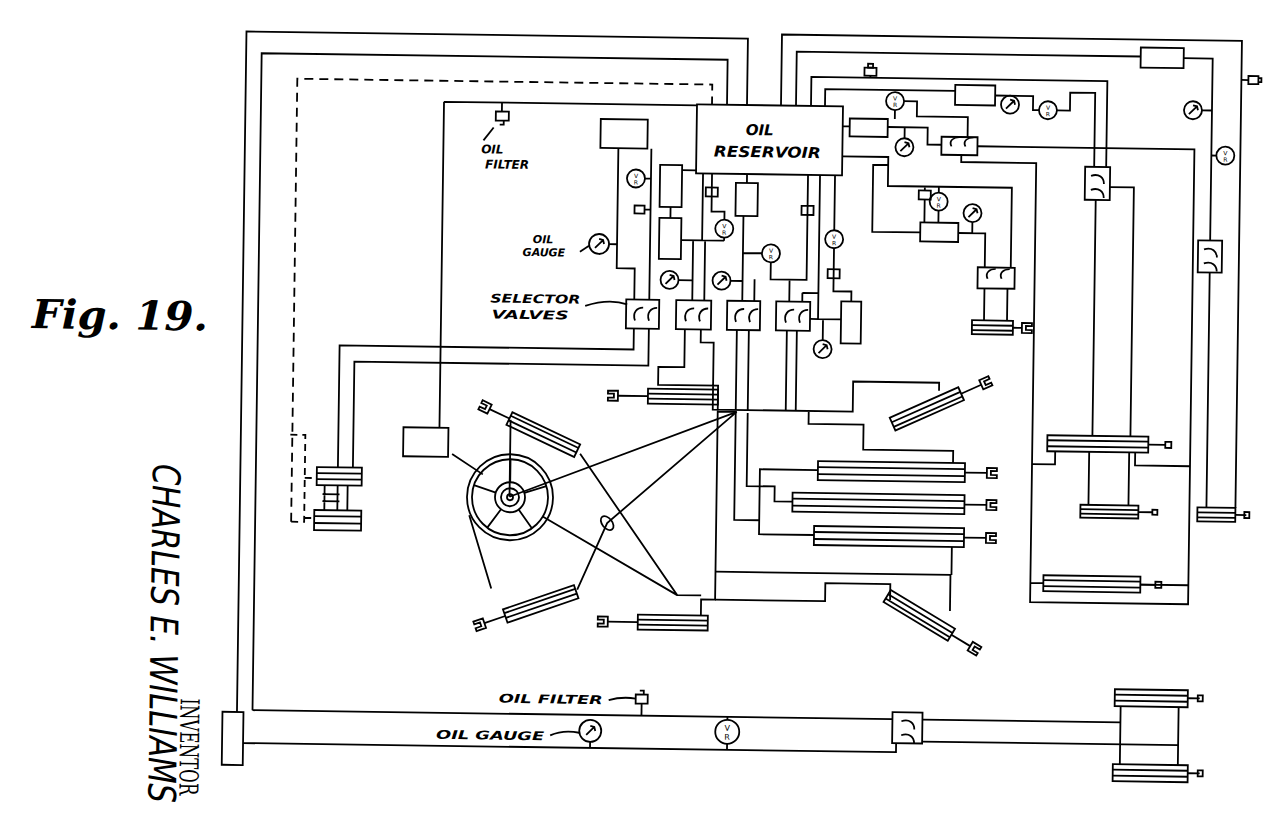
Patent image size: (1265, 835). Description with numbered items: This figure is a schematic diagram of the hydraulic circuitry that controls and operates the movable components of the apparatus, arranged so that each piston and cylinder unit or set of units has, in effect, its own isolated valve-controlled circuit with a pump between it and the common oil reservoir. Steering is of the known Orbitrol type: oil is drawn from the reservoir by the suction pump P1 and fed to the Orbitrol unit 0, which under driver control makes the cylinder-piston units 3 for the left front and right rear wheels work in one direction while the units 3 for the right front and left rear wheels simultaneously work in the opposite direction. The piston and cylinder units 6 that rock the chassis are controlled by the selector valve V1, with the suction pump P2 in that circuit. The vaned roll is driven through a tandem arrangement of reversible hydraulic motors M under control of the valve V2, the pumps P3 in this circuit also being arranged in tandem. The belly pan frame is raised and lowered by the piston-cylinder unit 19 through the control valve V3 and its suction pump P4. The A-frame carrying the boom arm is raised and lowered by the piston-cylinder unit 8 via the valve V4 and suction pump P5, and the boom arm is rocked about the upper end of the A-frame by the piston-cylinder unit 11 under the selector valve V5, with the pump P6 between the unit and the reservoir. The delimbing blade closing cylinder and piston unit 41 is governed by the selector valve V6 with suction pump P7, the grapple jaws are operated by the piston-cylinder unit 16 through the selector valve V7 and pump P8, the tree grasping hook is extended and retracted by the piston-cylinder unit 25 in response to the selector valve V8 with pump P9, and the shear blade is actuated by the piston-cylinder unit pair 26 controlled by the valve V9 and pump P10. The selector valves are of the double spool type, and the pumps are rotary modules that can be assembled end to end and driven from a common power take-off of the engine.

The cylinder-piston units 3 is at (546, 428).
The piston and cylinder units 6 is at (660, 405).
The piston-cylinder unit 8 is at (1112, 436).
The piston-cylinder unit 11 is at (1223, 515).
The piston-cylinder unit 16 is at (1151, 686).
The piston-cylinder unit 19 is at (1109, 508).
The piston-cylinder unit 25 is at (871, 464).
The piston-cylinder unit pair 26 is at (865, 494).
The delimbing blade closing cylinder and piston unit 41 is at (984, 332).
The hydraulic motors M is at (367, 493).
The Orbitrol unit 0 is at (472, 503).
The suction pump P1 is at (447, 462).
The suction pump P2 is at (609, 150).
The pumps P3 is at (661, 242).
The suction pump P4 is at (978, 82).
The suction pump P5 is at (876, 117).
The pump P6 is at (1172, 63).
The suction pump P7 is at (946, 238).
The pump P8 is at (254, 767).
The pump P9 is at (759, 195).
The pump P10 is at (865, 320).
The selector valve V1 is at (626, 329).
The valve V2 is at (715, 328).
The control valve V3 is at (1112, 171).
The valve V4 is at (978, 136).
The selector valve V5 is at (1199, 250).
The selector valve V6 is at (980, 278).
The selector valve V7 is at (917, 744).
The selector valve V8 is at (757, 330).
The valve V9 is at (806, 330).